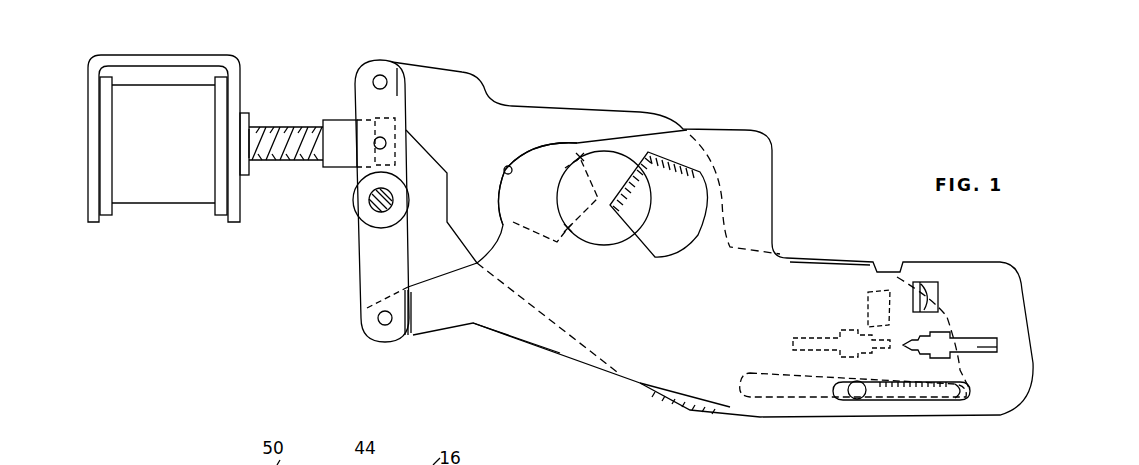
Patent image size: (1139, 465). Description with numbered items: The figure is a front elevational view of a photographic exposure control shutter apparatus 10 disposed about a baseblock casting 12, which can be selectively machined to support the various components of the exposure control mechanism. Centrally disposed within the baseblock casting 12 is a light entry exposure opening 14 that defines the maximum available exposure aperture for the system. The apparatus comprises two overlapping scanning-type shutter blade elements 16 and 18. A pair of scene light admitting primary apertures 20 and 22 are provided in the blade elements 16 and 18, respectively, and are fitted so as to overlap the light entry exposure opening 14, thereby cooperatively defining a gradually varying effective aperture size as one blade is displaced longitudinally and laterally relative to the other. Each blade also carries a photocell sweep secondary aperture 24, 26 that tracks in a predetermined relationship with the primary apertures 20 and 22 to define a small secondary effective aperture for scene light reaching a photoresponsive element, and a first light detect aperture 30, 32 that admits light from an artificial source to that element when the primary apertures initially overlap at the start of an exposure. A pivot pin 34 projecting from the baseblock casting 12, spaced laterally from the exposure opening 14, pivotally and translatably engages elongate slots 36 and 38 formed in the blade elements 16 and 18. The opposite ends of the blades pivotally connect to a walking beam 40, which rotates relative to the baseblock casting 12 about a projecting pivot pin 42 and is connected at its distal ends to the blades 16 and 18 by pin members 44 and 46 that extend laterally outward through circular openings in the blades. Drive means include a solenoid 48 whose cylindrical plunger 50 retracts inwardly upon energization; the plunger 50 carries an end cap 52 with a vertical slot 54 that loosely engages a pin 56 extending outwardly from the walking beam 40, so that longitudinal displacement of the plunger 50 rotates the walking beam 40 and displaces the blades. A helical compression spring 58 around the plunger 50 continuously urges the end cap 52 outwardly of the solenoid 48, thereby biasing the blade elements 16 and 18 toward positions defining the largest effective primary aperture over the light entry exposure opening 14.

The photographic exposure control shutter apparatus 10 is at (872, 97).
The baseblock casting 12 is at (889, 192).
The light entry exposure opening 14 is at (592, 245).
The shutter blade element 16 is at (517, 107).
The shutter blade element 18 is at (447, 333).
The scene light admitting primary aperture 20 is at (505, 173).
The scene light admitting primary aperture 22 is at (665, 250).
The photocell sweep secondary aperture 24 is at (793, 343).
The photocell sweep secondary aperture 26 is at (997, 345).
The first light detect aperture 30 is at (868, 292).
The first light detect aperture 32 is at (938, 290).
The pivot pin 34 is at (857, 399).
The elongate slot 36 is at (760, 393).
The elongate slot 38 is at (950, 393).
The walking beam 40 is at (357, 282).
The pivot pin 42 is at (370, 210).
The pin member 44 is at (382, 78).
The pin member 46 is at (385, 325).
The solenoid 48 is at (157, 232).
The solenoid plunger 50 is at (260, 130).
The end cap 52 is at (340, 163).
The vertical slot 54 is at (377, 120).
The pin 56 is at (384, 146).
The helical compression spring 58 is at (283, 163).